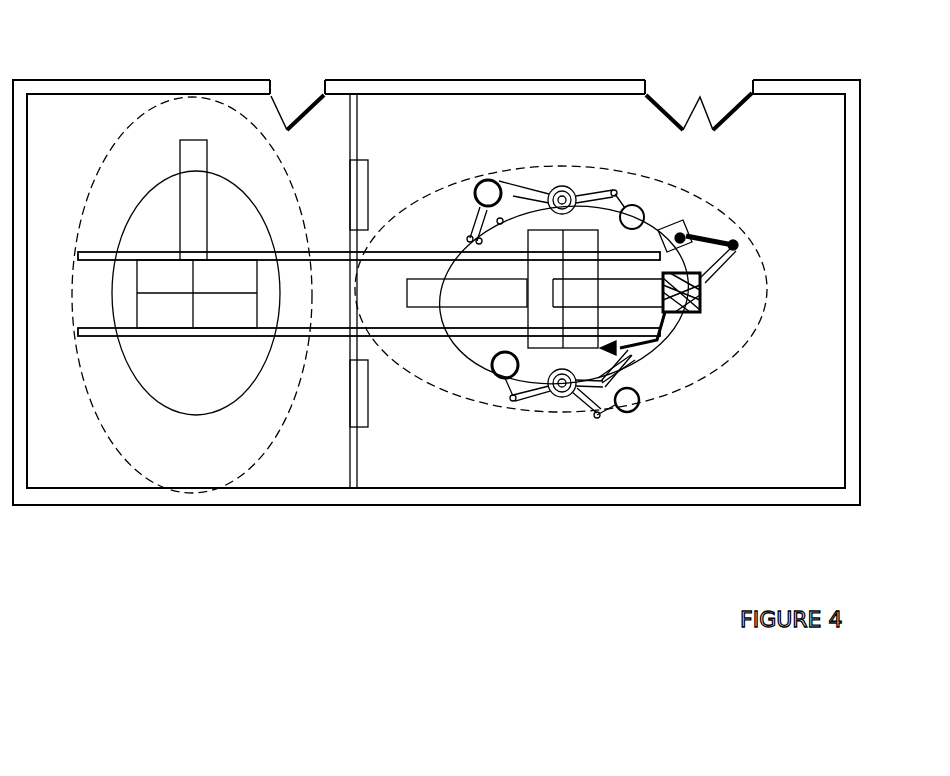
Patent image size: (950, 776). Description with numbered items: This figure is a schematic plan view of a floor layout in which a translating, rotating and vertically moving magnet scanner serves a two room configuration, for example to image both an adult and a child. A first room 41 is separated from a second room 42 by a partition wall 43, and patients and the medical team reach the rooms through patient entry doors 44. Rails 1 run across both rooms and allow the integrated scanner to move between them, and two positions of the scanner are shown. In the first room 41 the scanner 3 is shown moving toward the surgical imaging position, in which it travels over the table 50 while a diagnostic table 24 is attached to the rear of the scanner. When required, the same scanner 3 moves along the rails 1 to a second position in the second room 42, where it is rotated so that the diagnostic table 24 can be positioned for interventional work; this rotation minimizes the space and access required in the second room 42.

The rails 1 is at (328, 342).
The scanner 3 is at (176, 338).
The diagnostic table 24 is at (190, 133).
The first room 41 is at (812, 114).
The second room 42 is at (84, 112).
The partition wall 43 is at (373, 155).
The patient entry doors 44 is at (340, 53).
The table 50 is at (688, 313).